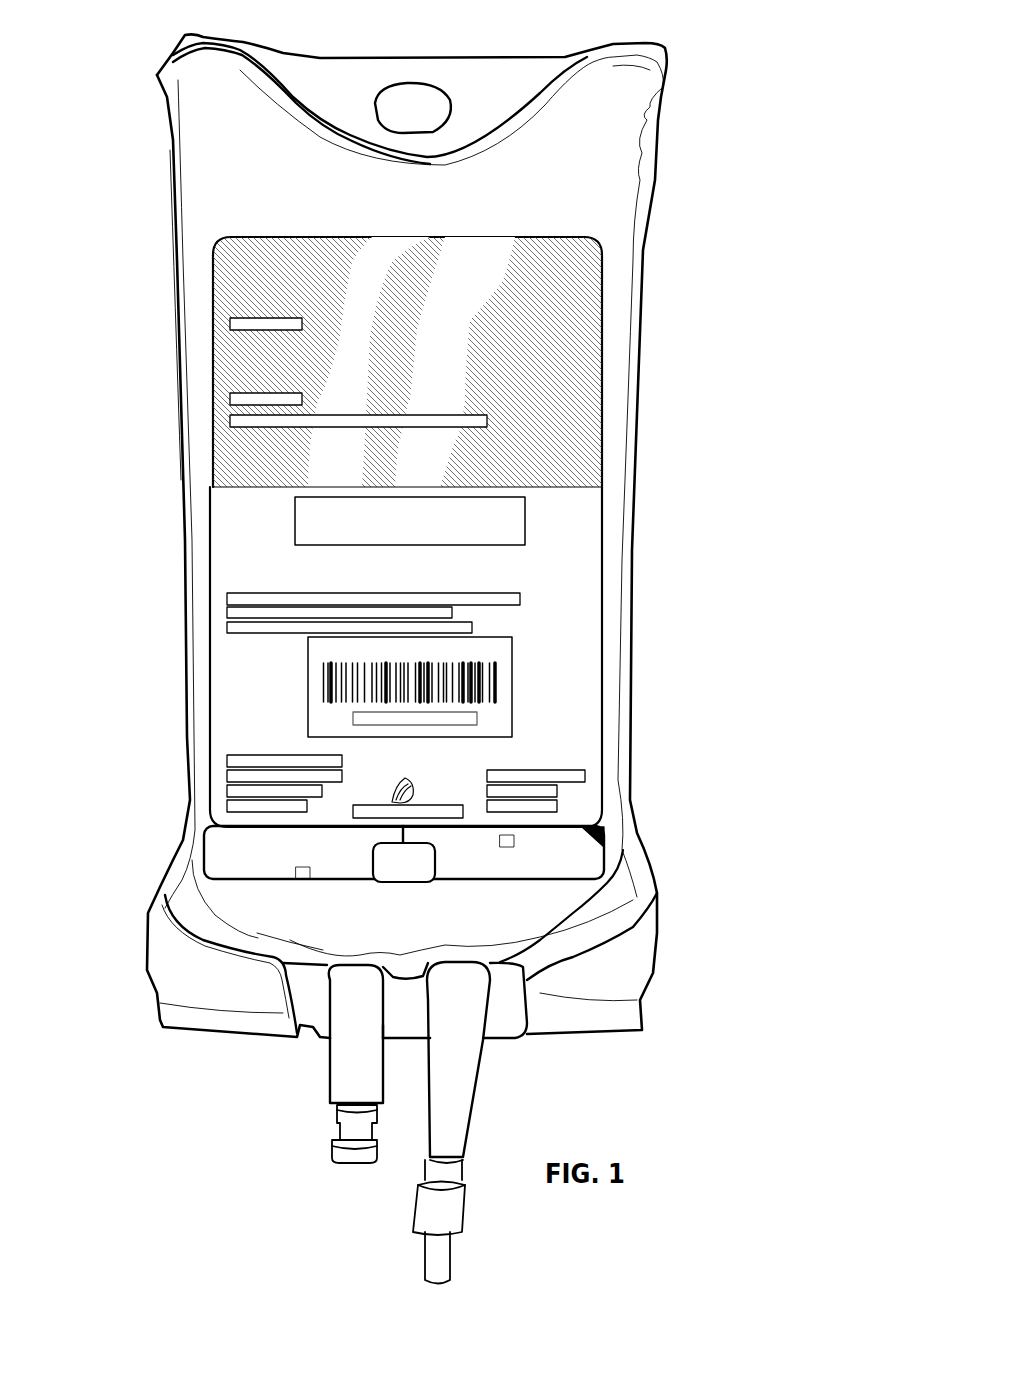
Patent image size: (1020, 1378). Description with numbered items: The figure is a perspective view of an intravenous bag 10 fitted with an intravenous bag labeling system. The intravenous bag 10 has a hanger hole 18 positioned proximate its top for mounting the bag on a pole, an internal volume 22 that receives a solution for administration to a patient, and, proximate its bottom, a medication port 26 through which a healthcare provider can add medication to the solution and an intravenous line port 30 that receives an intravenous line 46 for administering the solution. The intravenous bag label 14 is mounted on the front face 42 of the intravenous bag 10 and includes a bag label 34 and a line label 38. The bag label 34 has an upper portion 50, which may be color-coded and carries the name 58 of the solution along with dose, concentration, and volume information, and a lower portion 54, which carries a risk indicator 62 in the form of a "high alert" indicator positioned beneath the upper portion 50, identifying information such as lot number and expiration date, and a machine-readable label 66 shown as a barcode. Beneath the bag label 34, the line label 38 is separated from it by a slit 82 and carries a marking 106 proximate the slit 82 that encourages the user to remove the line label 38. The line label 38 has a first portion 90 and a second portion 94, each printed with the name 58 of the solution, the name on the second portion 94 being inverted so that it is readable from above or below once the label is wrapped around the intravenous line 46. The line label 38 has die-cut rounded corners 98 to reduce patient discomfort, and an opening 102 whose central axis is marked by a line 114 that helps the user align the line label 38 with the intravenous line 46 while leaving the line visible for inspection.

The intravenous bag 10 is at (680, 268).
The intravenous bag label 14 is at (660, 451).
The hanger hole 18 is at (437, 108).
The internal volume 22 is at (612, 181).
The medication port 26 is at (337, 1087).
The intravenous line port 30 is at (473, 1080).
The bag label 34 is at (604, 518).
The line label 38 is at (623, 850).
The front face 42 is at (192, 153).
The intravenous line 46 is at (440, 1268).
The upper portion 50 is at (583, 424).
The lower portion 54 is at (578, 722).
The name 58 is at (575, 300).
The risk indicator 62 is at (527, 541).
The machine-readable label 66 is at (497, 683).
The slit 82 is at (603, 795).
The first portion 90 is at (275, 857).
The second portion 94 is at (567, 877).
The rounded corners 98 is at (205, 828).
The opening 102 is at (380, 882).
The marking 106 is at (610, 862).
The line 114 is at (413, 882).